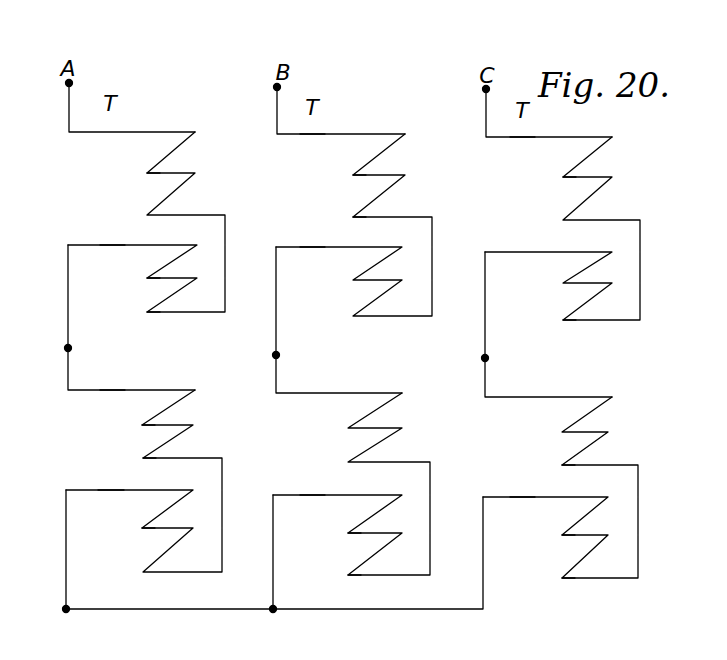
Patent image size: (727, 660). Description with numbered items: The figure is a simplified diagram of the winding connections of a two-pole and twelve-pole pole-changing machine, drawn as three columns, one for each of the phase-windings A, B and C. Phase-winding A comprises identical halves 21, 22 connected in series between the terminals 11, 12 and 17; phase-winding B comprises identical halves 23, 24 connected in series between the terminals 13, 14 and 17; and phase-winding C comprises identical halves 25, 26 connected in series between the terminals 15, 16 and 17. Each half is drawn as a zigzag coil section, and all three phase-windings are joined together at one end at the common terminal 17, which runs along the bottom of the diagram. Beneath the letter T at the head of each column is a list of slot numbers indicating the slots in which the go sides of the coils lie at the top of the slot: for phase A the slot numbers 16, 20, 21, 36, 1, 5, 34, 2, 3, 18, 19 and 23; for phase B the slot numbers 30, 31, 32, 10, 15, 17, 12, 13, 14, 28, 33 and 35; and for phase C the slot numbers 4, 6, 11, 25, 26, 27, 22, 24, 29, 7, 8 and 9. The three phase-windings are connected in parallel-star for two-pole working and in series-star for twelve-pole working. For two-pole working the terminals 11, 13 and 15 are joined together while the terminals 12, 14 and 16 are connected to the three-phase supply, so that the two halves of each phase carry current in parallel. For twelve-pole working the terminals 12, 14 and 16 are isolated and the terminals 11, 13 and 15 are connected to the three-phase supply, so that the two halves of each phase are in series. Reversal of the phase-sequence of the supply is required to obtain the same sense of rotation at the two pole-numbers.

The slot number 1 is at (129, 278).
The slot number 2 is at (127, 425).
The slot number 3 is at (127, 458).
The slot number 4 is at (522, 137).
The slot number 5 is at (129, 312).
The slot number 6 is at (545, 177).
The slot number 7 is at (522, 497).
The slot number 8 is at (545, 535).
The slot number 9 is at (545, 578).
The slot number 10 is at (312, 247).
The terminal 11 is at (72, 81).
The terminal 12 is at (68, 348).
The terminal 13 is at (280, 85).
The terminal 14 is at (276, 355).
The terminal 15 is at (489, 87).
The terminal 16 is at (485, 358).
The terminal 17 is at (66, 612).
The slot number 18 is at (109, 490).
The slot number 19 is at (124, 528).
The slot number 20 is at (128, 173).
The phase-winding half 21 is at (226, 226).
The phase-winding half 22 is at (223, 490).
The phase-winding half 23 is at (433, 228).
The phase-winding half 24 is at (431, 478).
The phase-winding half 25 is at (641, 232).
The phase-winding half 26 is at (639, 479).
The slot number 27 is at (542, 320).
The slot number 28 is at (312, 495).
The slot number 29 is at (541, 465).
The slot number 30 is at (310, 134).
The slot number 31 is at (332, 175).
The slot number 32 is at (332, 217).
The slot number 33 is at (329, 533).
The slot number 34 is at (110, 390).
The slot number 35 is at (329, 575).
The slot number 36 is at (110, 245).